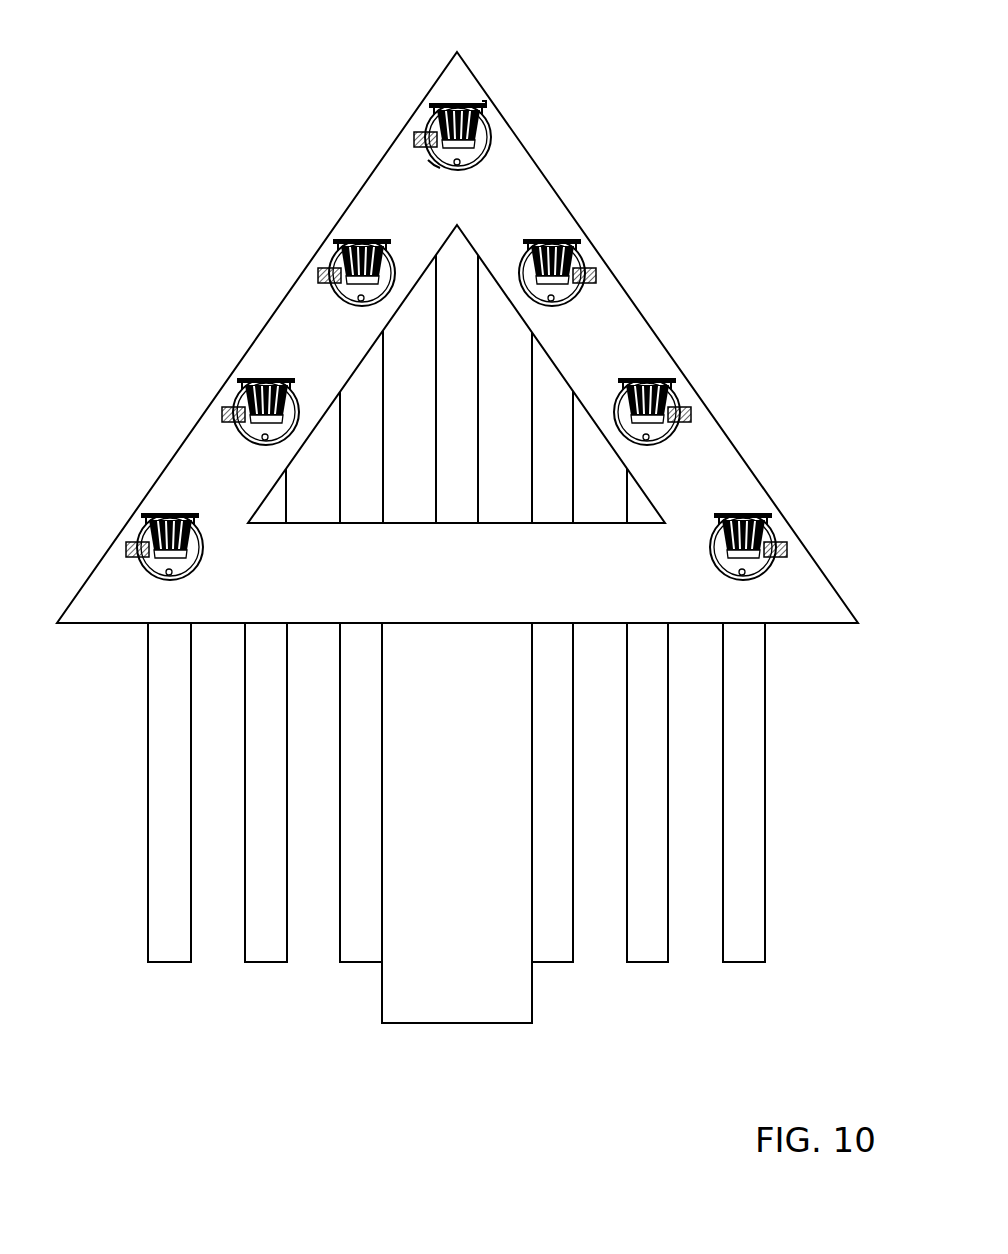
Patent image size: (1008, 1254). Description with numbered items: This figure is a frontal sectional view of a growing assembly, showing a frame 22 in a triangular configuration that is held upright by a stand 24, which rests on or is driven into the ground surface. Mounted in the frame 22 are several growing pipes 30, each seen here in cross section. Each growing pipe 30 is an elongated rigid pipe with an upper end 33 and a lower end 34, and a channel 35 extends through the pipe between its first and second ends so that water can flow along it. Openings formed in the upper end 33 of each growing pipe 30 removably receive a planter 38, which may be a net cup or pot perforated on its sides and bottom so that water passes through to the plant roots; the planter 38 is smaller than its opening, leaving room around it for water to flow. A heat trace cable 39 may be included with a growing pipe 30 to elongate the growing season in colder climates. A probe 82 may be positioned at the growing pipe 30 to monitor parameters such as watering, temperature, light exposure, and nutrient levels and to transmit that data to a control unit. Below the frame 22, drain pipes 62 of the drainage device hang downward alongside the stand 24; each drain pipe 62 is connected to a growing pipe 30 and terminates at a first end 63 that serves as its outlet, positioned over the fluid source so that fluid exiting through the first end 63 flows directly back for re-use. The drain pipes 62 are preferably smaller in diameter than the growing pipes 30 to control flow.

The frame 22 is at (257, 337).
The stand 24 is at (457, 1023).
The growing pipe 30 is at (490, 134).
The upper end 33 is at (432, 103).
The lower end 34 is at (457, 168).
The channel 35 is at (480, 126).
The planter 38 is at (482, 103).
The heat trace cable 39 is at (434, 166).
The drain pipe 62 is at (245, 758).
The first end 63 is at (757, 1020).
The probe 82 is at (415, 140).